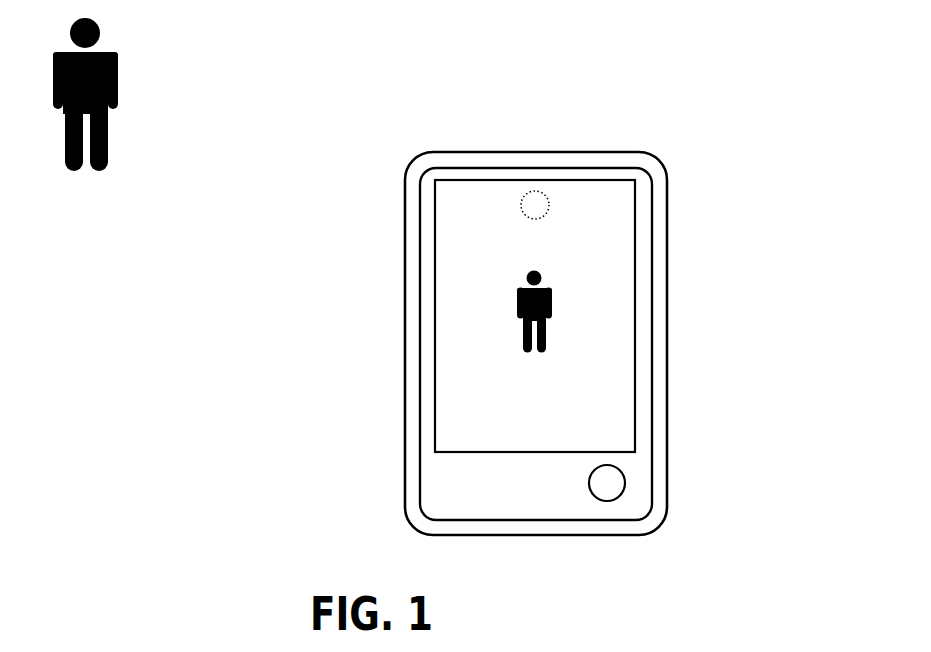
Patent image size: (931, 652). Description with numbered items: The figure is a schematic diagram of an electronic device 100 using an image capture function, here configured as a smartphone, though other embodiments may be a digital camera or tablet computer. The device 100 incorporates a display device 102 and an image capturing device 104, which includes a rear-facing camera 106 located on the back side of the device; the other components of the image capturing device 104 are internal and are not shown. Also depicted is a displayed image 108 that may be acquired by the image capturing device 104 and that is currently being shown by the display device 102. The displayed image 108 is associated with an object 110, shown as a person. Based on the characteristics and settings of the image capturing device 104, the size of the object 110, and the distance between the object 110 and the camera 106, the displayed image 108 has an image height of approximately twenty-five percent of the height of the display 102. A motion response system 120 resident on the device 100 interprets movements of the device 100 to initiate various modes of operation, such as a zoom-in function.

The electronic device 100 is at (555, 304).
The display device 102 is at (590, 417).
The image capturing device 104 is at (615, 316).
The rear-facing camera 106 is at (535, 190).
The displayed image 108 is at (550, 288).
The object 110 is at (115, 55).
The motion response system 120 is at (452, 247).